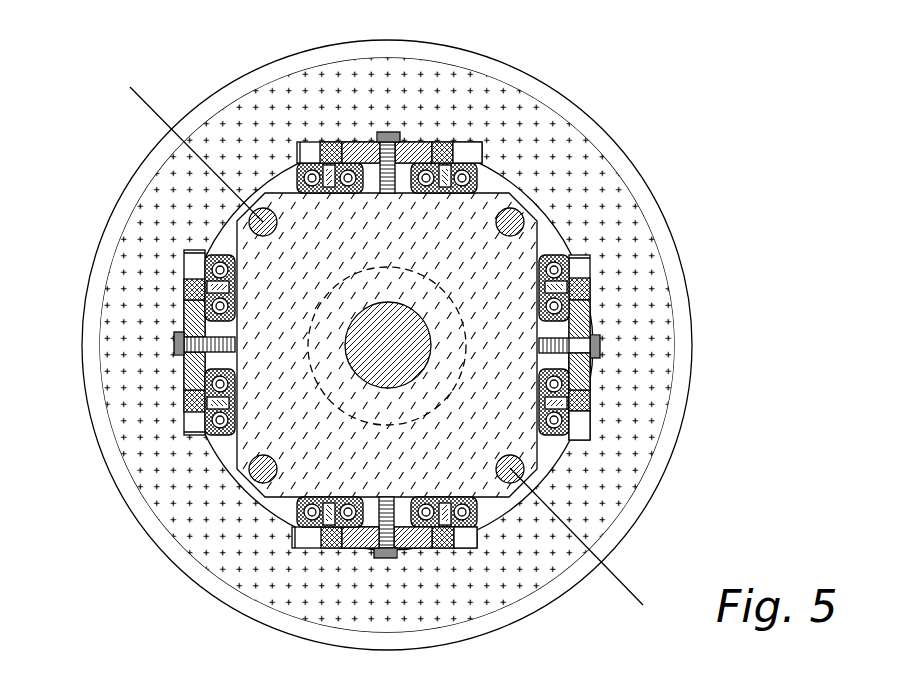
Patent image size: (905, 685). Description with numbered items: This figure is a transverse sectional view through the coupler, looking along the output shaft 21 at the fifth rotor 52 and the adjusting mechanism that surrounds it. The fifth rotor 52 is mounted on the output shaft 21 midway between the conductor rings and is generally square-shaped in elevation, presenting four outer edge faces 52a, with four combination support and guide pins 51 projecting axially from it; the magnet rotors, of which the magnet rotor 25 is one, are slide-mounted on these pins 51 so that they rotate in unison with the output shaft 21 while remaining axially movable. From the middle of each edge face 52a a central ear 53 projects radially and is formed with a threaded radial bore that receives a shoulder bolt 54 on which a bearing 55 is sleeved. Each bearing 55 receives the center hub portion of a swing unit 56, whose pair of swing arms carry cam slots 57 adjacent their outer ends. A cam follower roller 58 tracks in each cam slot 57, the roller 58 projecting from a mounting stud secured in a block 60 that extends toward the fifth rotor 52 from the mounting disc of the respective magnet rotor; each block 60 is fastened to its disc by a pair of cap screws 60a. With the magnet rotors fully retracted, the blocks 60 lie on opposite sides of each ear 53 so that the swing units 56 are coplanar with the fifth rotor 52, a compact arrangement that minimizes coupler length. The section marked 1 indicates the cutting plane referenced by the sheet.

The section line 1- 1 is at (187, 50).
The output shaft 21 is at (283, 487).
The magnet rotor 25 is at (160, 562).
The combination support and guide pin 51 is at (557, 257).
The fifth rotor 52 is at (297, 497).
The outer edge face 52a is at (512, 221).
The ear 53 is at (417, 142).
The shoulder bolt 54 is at (380, 558).
The bearing 55 is at (403, 550).
The swing unit 56 is at (355, 550).
The cam slot 57 is at (585, 422).
The cam follower roller 58 is at (463, 552).
The block 60 is at (577, 383).
The cap screw 60a is at (572, 255).